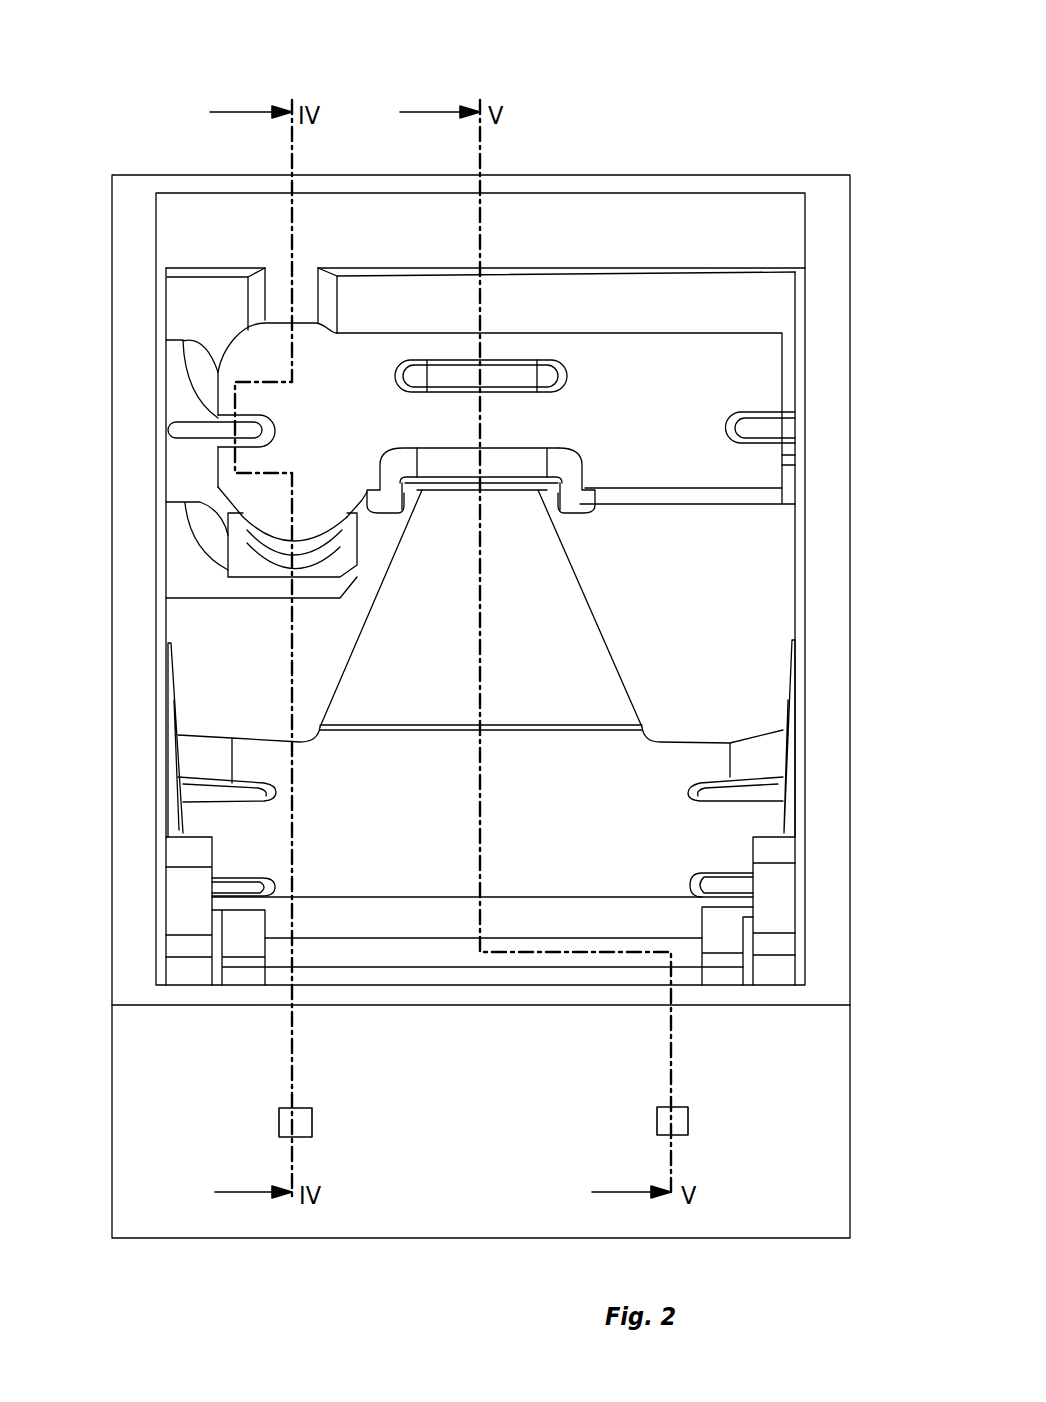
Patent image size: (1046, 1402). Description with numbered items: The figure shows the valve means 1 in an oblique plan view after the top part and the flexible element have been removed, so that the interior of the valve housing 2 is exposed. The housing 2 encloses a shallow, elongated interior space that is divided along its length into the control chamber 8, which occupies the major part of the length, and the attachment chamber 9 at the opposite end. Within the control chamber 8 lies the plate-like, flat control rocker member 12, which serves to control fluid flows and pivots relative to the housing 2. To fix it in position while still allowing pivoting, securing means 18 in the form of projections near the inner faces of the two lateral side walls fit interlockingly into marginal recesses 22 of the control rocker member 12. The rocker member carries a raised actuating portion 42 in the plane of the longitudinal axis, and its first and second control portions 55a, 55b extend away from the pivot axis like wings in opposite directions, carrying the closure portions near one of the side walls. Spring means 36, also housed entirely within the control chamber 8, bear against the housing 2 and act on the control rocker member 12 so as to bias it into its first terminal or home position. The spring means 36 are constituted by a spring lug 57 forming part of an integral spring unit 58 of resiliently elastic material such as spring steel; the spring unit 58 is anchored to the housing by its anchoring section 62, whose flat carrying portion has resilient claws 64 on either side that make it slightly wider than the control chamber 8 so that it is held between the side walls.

The valve means 1 is at (657, 148).
The valve housing 2 is at (828, 765).
The control chamber 8 is at (729, 231).
The attachment chamber 9 is at (345, 950).
The control rocker member 12 is at (748, 365).
The securing means 18 is at (212, 440).
The marginal recesses 22 is at (273, 447).
The spring means 36 is at (542, 606).
The actuating portion 42 is at (513, 366).
The first control portion 55a is at (262, 515).
The second control portion 55b is at (273, 335).
The spring lug 57 is at (588, 631).
The spring unit 58 is at (640, 690).
The anchoring section 62 is at (637, 796).
The claws 64 is at (178, 782).